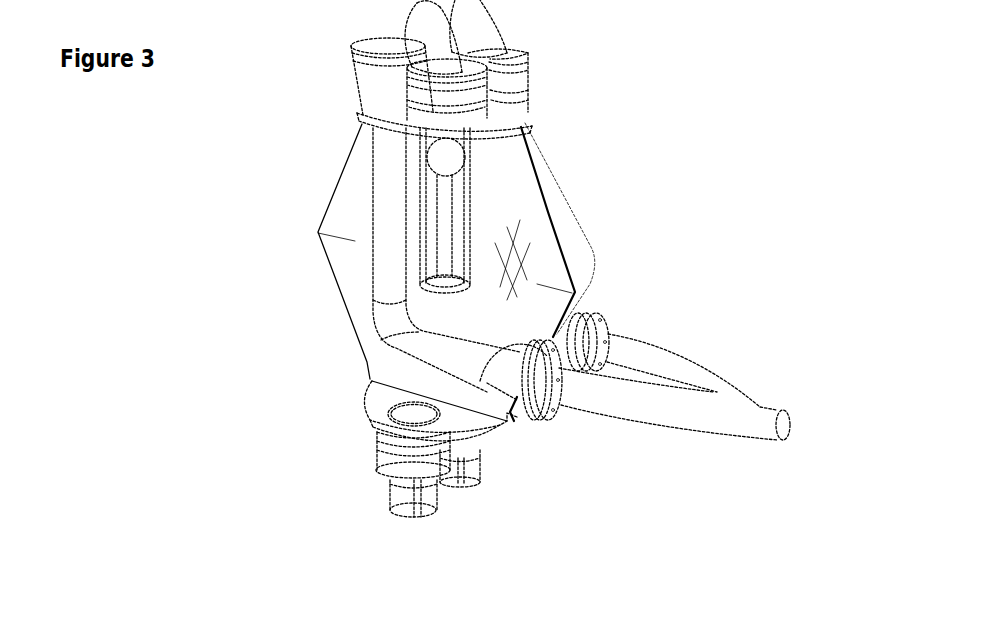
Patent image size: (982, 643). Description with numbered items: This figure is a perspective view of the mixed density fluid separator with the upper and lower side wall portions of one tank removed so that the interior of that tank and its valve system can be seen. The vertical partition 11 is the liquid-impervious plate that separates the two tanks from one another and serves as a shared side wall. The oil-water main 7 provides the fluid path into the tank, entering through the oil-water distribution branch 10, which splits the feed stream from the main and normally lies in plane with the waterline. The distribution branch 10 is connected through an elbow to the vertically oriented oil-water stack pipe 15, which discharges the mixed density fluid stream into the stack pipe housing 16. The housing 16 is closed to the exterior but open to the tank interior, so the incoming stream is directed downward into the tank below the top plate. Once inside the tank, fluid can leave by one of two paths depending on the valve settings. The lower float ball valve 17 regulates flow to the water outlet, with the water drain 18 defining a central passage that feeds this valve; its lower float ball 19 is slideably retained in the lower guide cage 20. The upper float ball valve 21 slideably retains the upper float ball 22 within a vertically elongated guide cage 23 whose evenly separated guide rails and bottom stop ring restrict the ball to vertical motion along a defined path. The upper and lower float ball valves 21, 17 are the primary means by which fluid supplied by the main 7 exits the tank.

The oil-water main 7 is at (745, 438).
The oil-water distribution branch 10 is at (610, 424).
The partition 11 is at (545, 272).
The oil-water stack pipe 15 is at (382, 252).
The stack pipe housing 16 is at (347, 87).
The lower float ball valve 17 is at (363, 470).
The water drain 18 is at (413, 417).
The lower float ball 19 is at (422, 495).
The lower guide cage 20 is at (380, 493).
The upper float ball valve 21 is at (550, 67).
The upper float ball 22 is at (457, 158).
The guide cage 23 is at (475, 207).